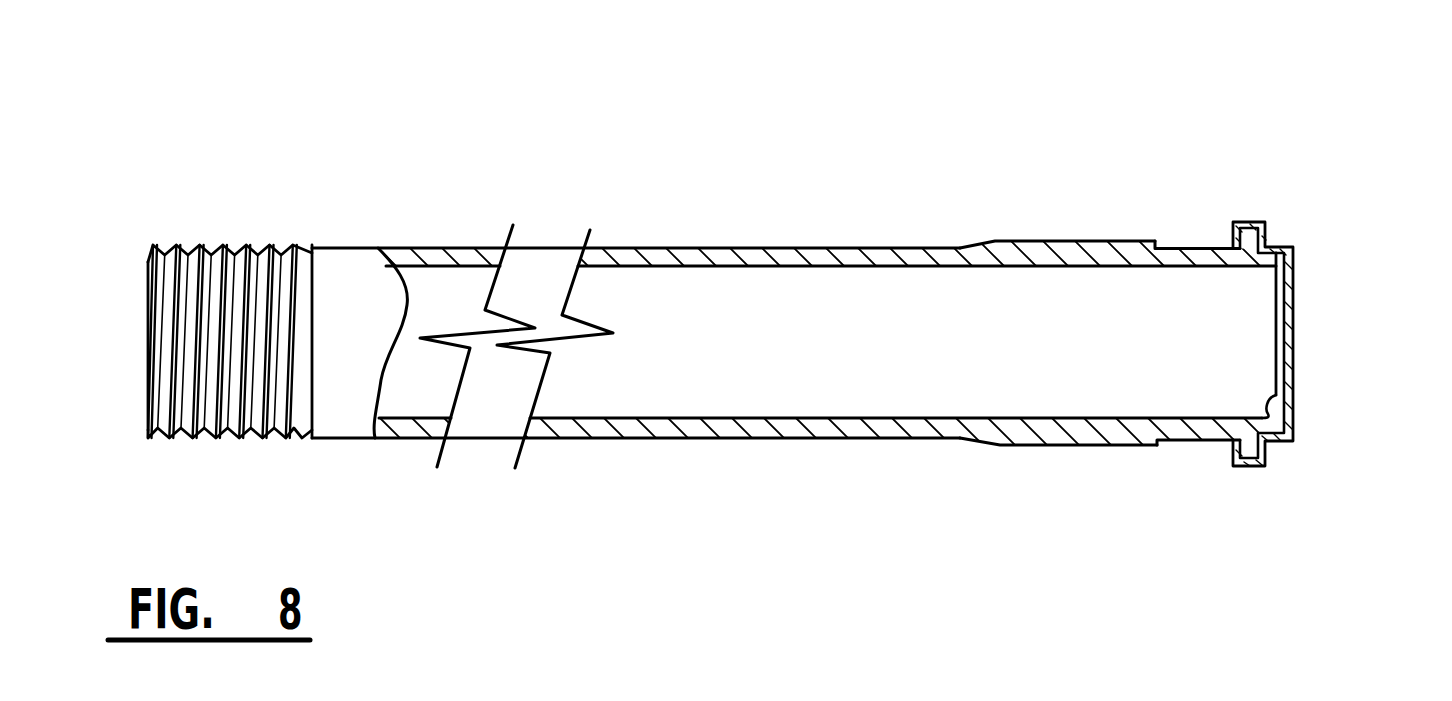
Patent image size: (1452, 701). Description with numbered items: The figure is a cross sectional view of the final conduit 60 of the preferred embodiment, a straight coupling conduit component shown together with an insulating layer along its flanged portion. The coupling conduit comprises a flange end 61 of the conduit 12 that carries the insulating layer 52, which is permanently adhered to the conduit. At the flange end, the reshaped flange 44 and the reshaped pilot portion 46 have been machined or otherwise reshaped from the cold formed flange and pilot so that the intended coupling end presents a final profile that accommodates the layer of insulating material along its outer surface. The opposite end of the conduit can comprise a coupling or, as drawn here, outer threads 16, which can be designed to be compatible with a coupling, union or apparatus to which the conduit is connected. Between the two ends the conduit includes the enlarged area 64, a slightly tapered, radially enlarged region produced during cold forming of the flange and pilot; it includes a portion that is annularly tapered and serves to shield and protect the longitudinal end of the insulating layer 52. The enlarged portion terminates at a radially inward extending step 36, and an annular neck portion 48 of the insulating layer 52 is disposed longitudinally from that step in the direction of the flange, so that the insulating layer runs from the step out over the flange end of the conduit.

The conduit 12 is at (755, 248).
The outer threads 16 is at (160, 248).
The enlarged area 64 is at (1085, 241).
The annular neck portion 48 is at (1188, 248).
The radially inward extending step 36 is at (1157, 442).
The final conduit 60 is at (1272, 158).
The reshaped flange 44 is at (1250, 222).
The insulating layer 52 is at (1293, 280).
The flange end 61 is at (1322, 219).
The reshaped pilot portion 46 is at (1270, 405).